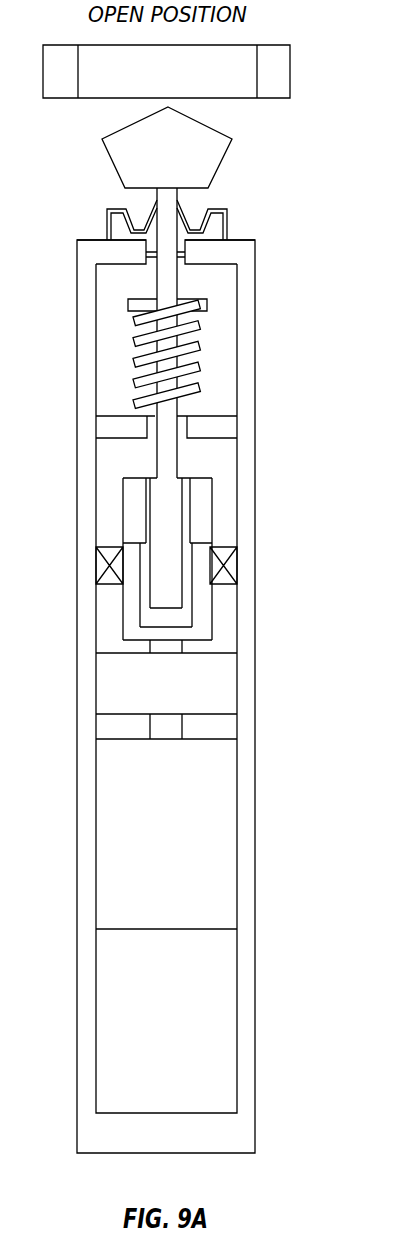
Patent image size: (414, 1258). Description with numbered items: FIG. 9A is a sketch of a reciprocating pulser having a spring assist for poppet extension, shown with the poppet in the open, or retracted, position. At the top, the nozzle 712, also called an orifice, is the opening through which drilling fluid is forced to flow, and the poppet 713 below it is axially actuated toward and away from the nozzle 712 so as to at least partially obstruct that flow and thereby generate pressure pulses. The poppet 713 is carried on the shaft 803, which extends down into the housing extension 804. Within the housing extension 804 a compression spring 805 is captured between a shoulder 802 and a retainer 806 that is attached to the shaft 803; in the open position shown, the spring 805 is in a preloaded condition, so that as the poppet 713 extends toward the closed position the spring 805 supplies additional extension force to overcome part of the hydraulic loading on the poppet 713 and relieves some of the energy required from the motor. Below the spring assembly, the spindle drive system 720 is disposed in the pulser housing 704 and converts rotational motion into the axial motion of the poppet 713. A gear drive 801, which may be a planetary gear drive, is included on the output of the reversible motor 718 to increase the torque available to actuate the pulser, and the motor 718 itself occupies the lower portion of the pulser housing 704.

The nozzle 712 is at (267, 44).
The poppet 713 is at (222, 162).
The pulser housing 704 is at (255, 473).
The spindle drive system 720 is at (275, 519).
The housing extension 804 is at (255, 250).
The shaft 803 is at (156, 276).
The retainer 806 is at (207, 303).
The compression spring 805 is at (198, 353).
The shoulder 802 is at (227, 415).
The gear drive 801 is at (237, 682).
The reversible motor 718 is at (237, 795).